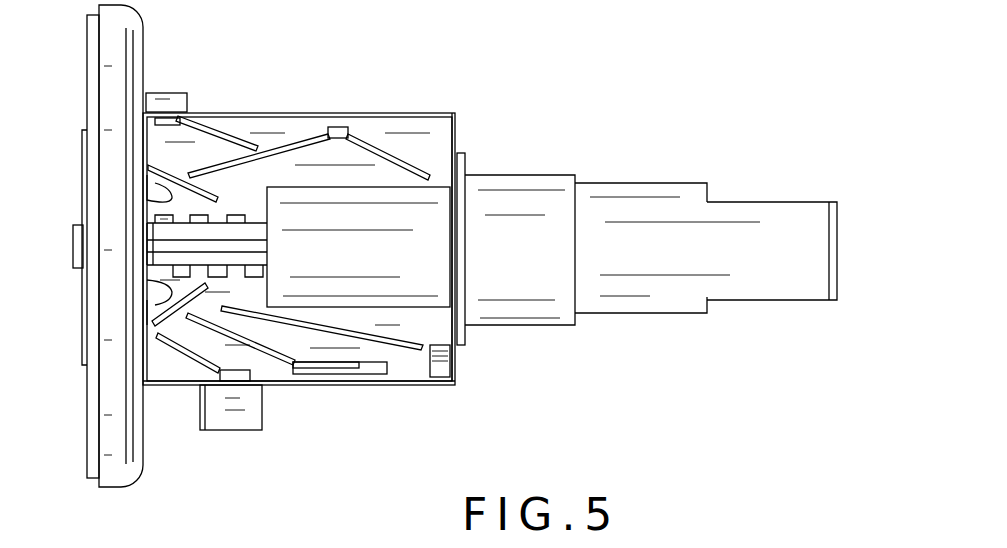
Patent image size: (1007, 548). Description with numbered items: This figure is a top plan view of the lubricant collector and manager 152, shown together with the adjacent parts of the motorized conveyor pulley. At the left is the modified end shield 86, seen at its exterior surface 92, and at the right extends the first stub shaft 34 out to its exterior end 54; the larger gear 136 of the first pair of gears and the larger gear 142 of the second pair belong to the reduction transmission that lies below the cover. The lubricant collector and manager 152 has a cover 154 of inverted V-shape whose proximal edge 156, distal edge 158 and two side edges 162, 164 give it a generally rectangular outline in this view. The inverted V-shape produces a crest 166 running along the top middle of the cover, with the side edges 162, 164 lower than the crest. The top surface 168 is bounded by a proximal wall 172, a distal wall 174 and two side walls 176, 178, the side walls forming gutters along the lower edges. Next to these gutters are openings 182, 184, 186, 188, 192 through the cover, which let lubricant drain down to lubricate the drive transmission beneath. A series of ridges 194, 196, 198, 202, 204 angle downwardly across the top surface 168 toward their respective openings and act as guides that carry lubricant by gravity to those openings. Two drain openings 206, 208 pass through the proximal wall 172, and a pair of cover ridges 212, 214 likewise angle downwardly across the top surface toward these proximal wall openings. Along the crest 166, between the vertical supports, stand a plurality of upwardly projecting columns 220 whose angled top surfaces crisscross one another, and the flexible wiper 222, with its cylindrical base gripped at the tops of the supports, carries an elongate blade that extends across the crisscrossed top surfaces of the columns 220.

The first stub shaft 34 is at (632, 207).
The exterior end 54 is at (838, 218).
The modified end shield 86 is at (130, 42).
The exterior surface 92 is at (143, 57).
The larger gear of first pair 136 is at (163, 102).
The larger gear of second pair 142 is at (230, 418).
The lubricant collector and manager 152 is at (377, 72).
The cover 154 is at (407, 347).
The proximal edge 156 is at (143, 380).
The distal edge 158 is at (450, 142).
The side edge 162 is at (290, 383).
The side edge 164 is at (277, 112).
The crest 166 is at (440, 265).
The top surface 168 is at (430, 233).
The proximal wall 172 is at (177, 125).
The distal wall 174 is at (440, 206).
The side wall 176 is at (363, 387).
The side wall 178 is at (443, 110).
The opening 182 is at (225, 388).
The opening 184 is at (330, 385).
The opening 186 is at (447, 385).
The opening 188 is at (345, 118).
The opening 192 is at (190, 108).
The ridge 194 is at (193, 353).
The ridge 196 is at (267, 353).
The ridge 198 is at (395, 270).
The ridge 202 is at (305, 138).
The ridge 204 is at (240, 128).
The drain opening 206 is at (150, 305).
The drain opening 208 is at (150, 183).
The cover ridge 212 is at (175, 328).
The cover ridge 214 is at (172, 178).
The columns 220 is at (167, 228).
The flexible wiper 222 is at (182, 250).